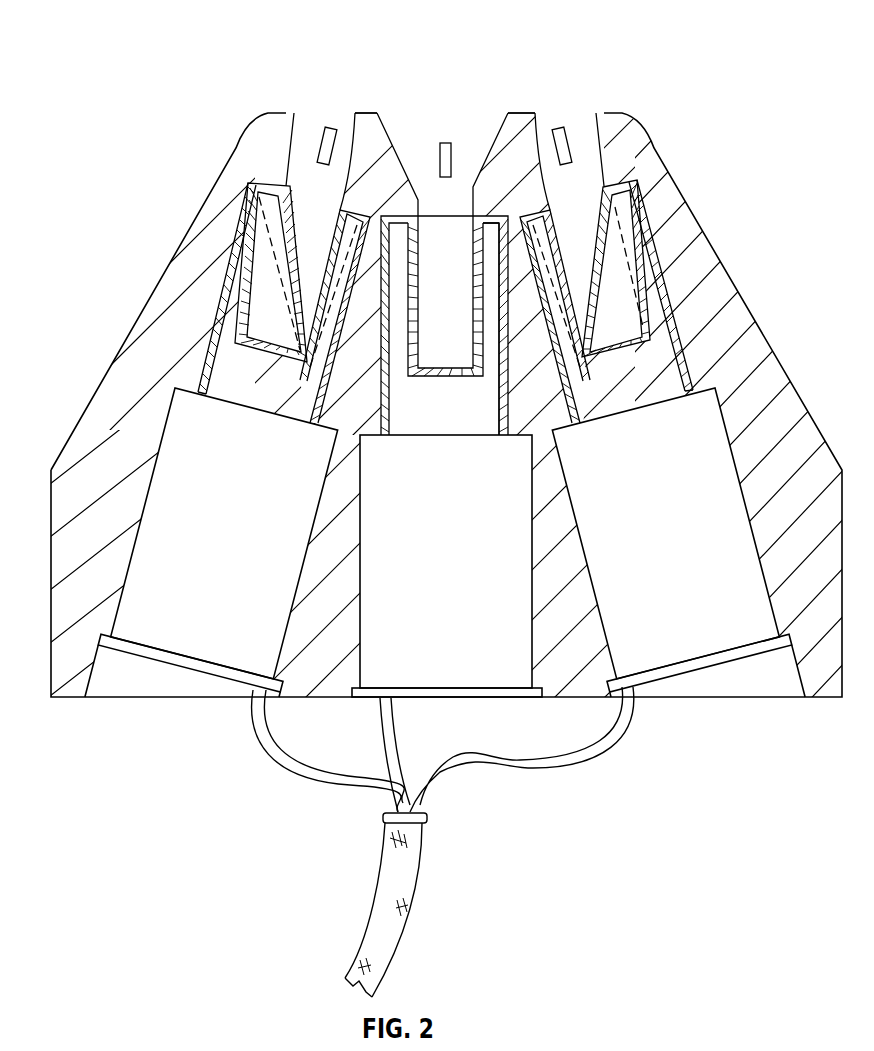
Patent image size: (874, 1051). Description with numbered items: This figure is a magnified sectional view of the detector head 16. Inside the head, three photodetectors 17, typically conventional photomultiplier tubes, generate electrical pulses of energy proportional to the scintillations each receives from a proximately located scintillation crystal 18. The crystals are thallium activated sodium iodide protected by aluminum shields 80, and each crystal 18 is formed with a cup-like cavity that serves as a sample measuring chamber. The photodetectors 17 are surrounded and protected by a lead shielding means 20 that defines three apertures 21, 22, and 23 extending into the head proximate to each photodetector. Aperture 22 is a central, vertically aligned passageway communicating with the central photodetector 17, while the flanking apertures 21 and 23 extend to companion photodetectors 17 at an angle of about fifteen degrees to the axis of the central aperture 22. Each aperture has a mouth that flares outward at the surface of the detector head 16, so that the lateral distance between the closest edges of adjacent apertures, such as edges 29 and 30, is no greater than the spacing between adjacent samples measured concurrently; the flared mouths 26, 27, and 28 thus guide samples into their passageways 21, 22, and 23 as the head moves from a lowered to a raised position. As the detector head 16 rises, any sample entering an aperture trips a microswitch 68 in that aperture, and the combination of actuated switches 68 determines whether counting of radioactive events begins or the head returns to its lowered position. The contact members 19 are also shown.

The detector head 16 is at (740, 226).
The photodetector 17 is at (445, 691).
The scintillation crystal 18 is at (230, 353).
The contact members 19 is at (348, 209).
The lead shielding means 20 is at (97, 387).
The aperture 21 is at (302, 167).
The central aperture 22 is at (432, 170).
The aperture 23 is at (598, 168).
The flared mouth 26 is at (352, 143).
The flared mouth 27 is at (386, 135).
The flared mouth 28 is at (538, 175).
The edge 29 is at (474, 195).
The edge 30 is at (490, 215).
The microswitch 68 is at (327, 128).
The aluminum shield 80 is at (412, 307).